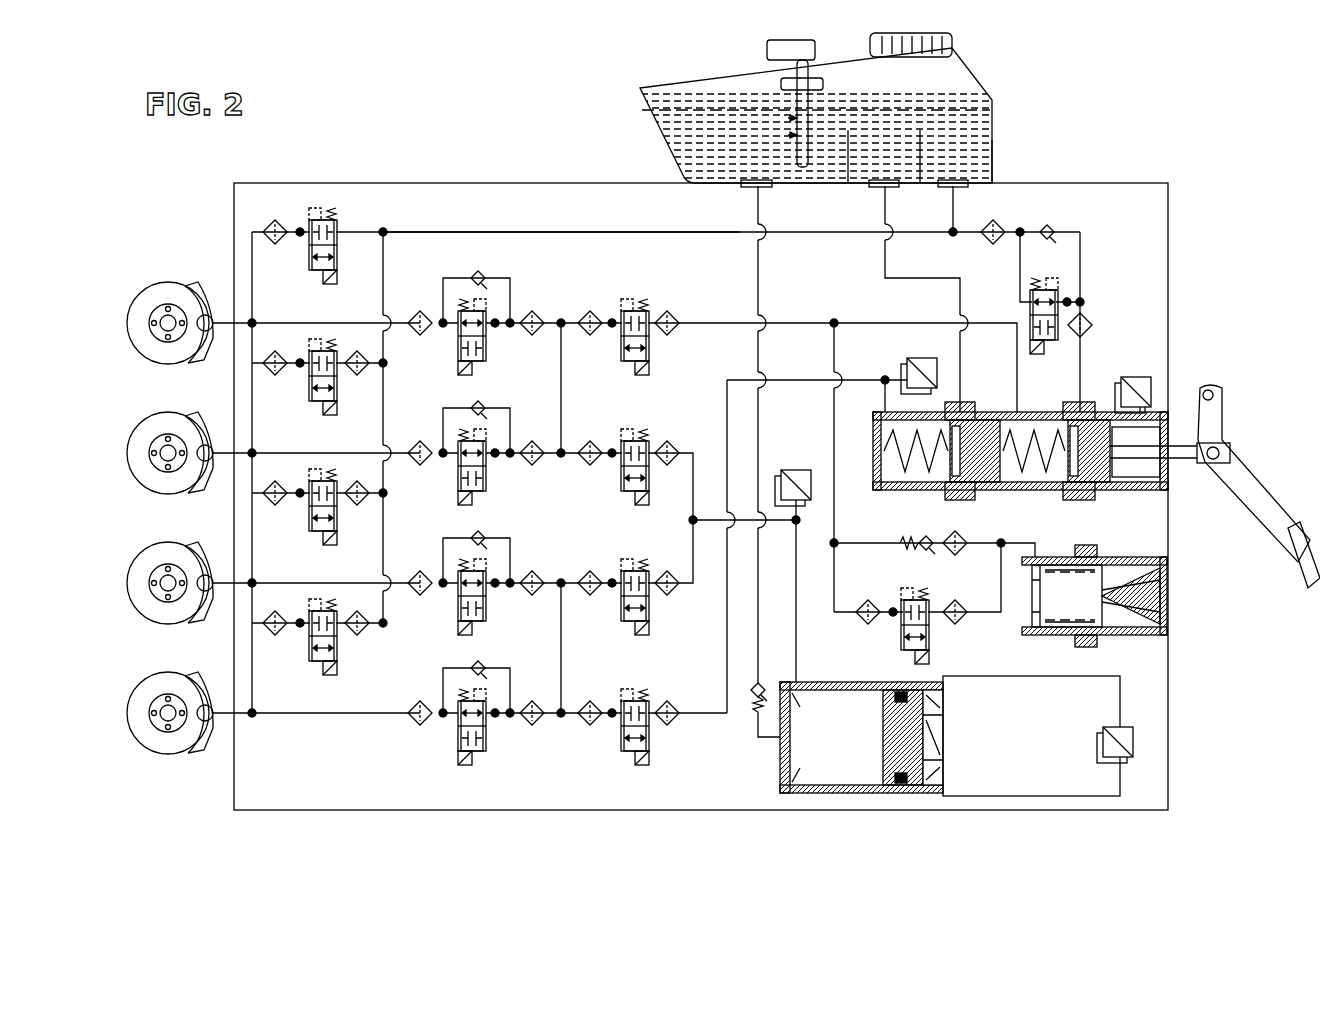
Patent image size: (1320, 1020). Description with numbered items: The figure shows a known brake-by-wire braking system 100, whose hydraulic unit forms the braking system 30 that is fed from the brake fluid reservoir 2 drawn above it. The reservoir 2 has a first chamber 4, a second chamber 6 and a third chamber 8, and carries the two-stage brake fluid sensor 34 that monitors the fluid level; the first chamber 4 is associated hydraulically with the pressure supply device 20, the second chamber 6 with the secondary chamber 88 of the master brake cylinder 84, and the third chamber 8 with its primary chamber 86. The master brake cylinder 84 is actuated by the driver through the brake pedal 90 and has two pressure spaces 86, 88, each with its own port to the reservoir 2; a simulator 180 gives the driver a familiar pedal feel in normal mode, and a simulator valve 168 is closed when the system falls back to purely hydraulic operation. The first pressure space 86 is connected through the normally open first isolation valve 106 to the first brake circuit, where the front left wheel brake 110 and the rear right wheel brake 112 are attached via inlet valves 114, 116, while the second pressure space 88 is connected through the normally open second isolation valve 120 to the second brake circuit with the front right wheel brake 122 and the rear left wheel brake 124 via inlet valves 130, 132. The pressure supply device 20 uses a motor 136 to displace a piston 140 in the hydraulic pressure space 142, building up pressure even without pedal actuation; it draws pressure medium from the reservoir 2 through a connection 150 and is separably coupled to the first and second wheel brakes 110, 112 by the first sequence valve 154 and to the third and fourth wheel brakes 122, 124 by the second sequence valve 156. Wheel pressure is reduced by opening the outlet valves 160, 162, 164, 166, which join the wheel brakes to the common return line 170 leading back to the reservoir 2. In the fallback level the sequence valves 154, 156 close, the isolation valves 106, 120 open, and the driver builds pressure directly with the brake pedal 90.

The brake fluid reservoir 2 is at (973, 93).
The first chamber 4 is at (832, 143).
The second chamber 6 is at (900, 145).
The third chamber 8 is at (973, 152).
The pressure supply device 20 is at (1128, 778).
The braking system 30 is at (438, 161).
The two-stage brake fluid sensor 34 is at (802, 108).
The master brake cylinder 84 is at (1126, 500).
The first pressure space 86 is at (1050, 470).
The second pressure space 88 is at (897, 470).
The brake pedal 90 is at (1255, 505).
The braking system 100 is at (1108, 163).
The first isolation valve 106 is at (622, 343).
The first wheel brake 110 is at (200, 290).
The second wheel brake 112 is at (200, 420).
The inlet valve 114 is at (458, 343).
The inlet valve 116 is at (458, 473).
The second isolation valve 120 is at (622, 733).
The third wheel brake 122 is at (200, 550).
The fourth wheel brake 124 is at (200, 680).
The inlet valve 130 is at (458, 603).
The inlet valve 132 is at (458, 733).
The motor 136 is at (1035, 780).
The piston 140 is at (880, 755).
The hydraulic pressure space 142 is at (818, 755).
The connection 150 is at (753, 670).
The first sequence valve 154 is at (622, 473).
The second sequence valve 156 is at (622, 603).
The outlet valve 160 is at (310, 250).
The outlet valve 162 is at (310, 380).
The outlet valve 164 is at (310, 510).
The outlet valve 166 is at (310, 640).
The simulator valve 168 is at (930, 630).
The common return line 170 is at (517, 232).
The simulator 180 is at (1126, 650).